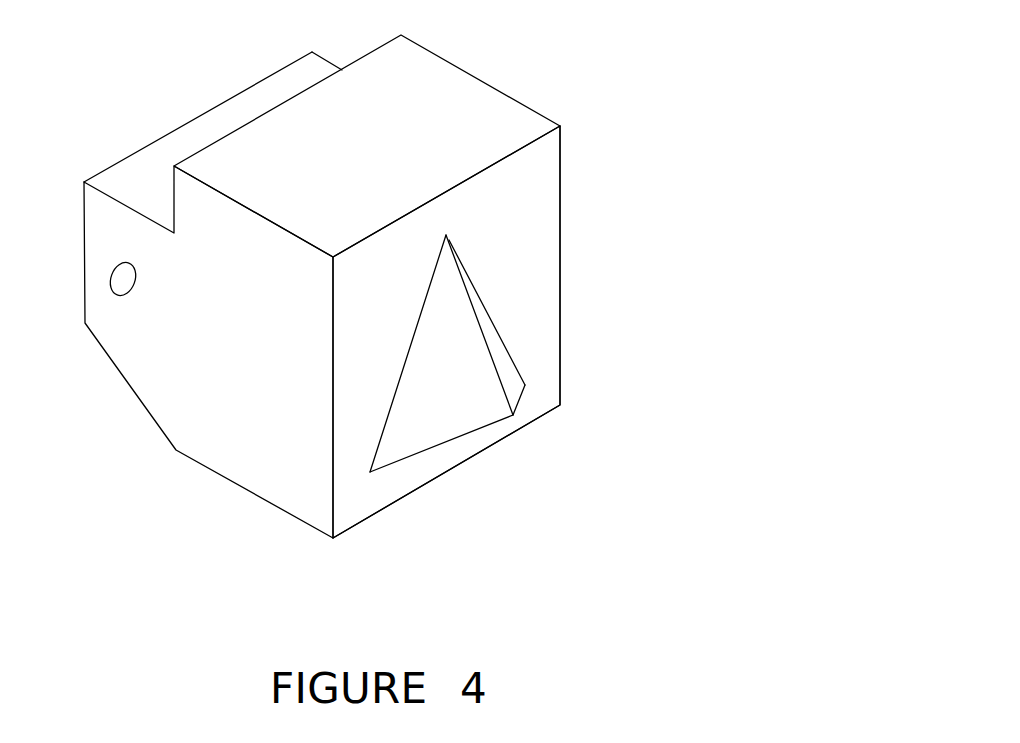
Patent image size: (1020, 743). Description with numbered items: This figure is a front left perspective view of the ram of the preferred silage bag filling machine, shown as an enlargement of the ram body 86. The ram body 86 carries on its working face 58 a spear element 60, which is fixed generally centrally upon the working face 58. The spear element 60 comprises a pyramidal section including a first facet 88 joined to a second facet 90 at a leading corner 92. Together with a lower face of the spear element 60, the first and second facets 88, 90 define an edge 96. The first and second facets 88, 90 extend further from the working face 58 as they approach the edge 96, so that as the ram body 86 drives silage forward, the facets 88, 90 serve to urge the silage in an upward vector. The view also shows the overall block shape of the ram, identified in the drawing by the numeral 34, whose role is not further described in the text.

The mounting block 34 is at (381, 318).
The working face 58 is at (497, 368).
The spear element 60 is at (497, 420).
The ram body 86 is at (386, 141).
The first facet 88 is at (369, 422).
The second facet 90 is at (575, 312).
The leading corner 92 is at (562, 323).
The edge 96 is at (582, 437).